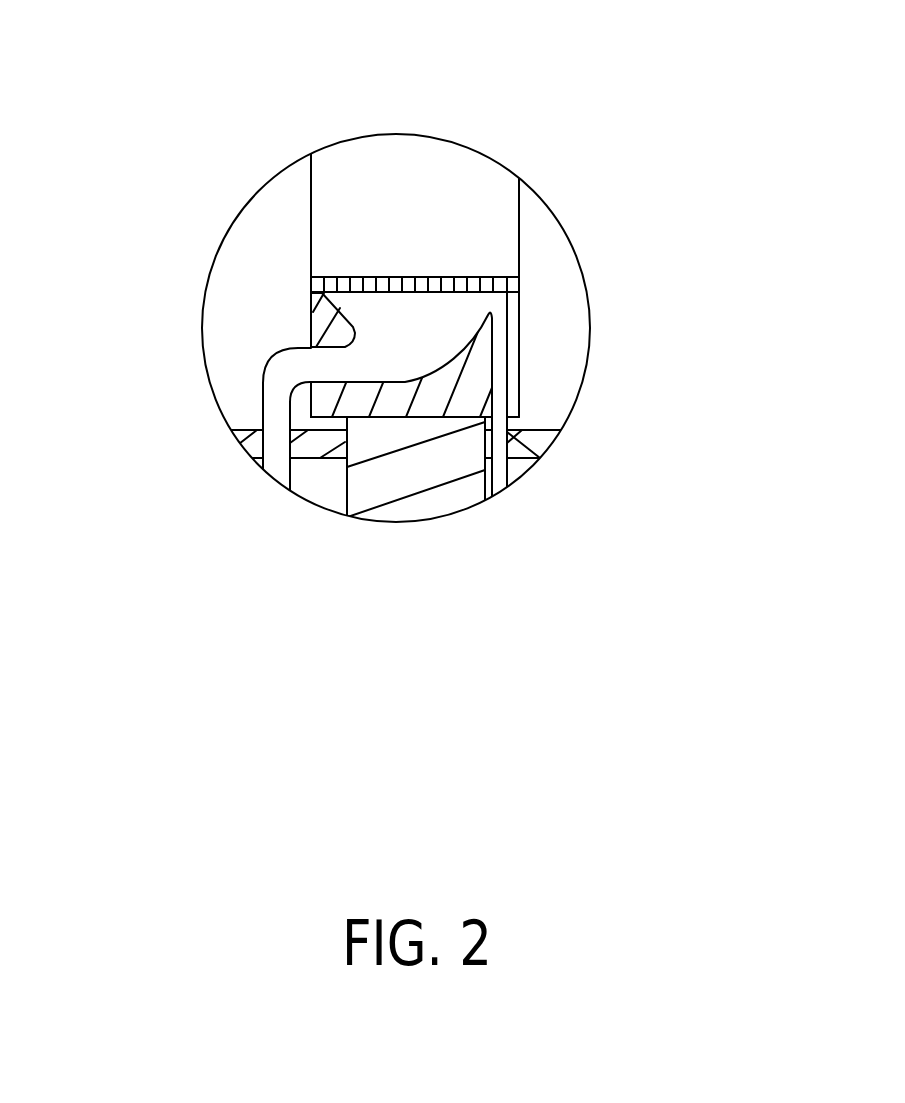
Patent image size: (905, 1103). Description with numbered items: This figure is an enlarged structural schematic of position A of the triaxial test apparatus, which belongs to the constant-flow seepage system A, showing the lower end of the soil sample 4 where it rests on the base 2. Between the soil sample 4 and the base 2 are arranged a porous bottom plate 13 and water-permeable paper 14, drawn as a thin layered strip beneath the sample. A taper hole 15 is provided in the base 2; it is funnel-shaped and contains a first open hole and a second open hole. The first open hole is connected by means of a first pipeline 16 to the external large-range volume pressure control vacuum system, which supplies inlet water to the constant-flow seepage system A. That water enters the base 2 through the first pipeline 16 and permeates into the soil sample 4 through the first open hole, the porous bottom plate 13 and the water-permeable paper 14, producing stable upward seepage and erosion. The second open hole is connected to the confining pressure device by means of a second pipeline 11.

The constant-flow seepage system A is at (345, 138).
The soil sample 4 is at (397, 175).
The water-permeable paper 14 is at (483, 276).
The porous bottom plate 13 is at (519, 276).
The base 2 is at (327, 323).
The first pipeline 16 is at (273, 407).
The taper hole 15 is at (395, 340).
The second pipeline 11 is at (497, 338).